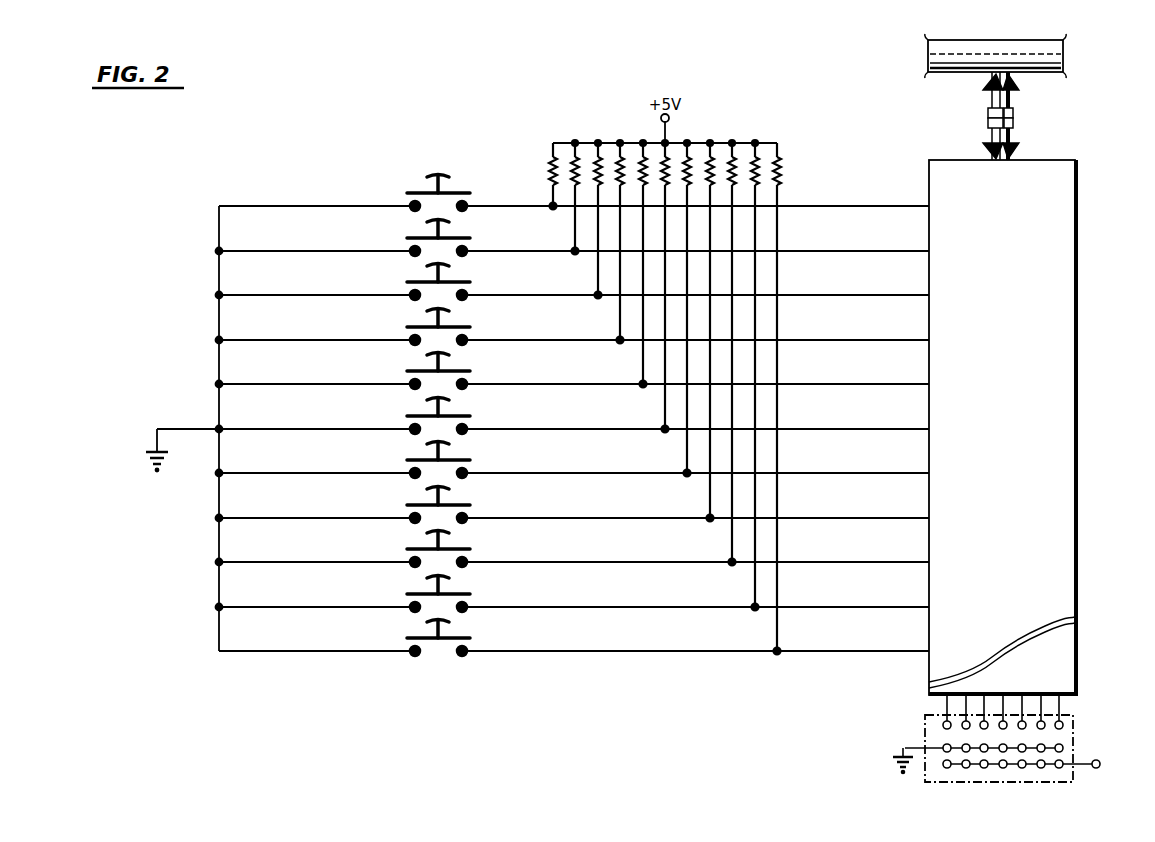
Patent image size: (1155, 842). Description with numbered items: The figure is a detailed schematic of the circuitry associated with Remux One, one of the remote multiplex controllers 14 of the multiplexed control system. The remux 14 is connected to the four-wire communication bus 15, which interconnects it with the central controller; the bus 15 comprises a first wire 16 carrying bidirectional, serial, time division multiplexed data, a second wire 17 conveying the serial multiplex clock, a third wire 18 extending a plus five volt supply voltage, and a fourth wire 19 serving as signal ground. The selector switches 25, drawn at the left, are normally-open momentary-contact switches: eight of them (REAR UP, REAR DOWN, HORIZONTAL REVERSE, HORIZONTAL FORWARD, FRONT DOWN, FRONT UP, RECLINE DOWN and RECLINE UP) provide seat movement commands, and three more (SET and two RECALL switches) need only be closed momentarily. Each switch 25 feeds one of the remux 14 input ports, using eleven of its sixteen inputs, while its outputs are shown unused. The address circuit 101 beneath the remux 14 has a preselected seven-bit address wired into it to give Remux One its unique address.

The remote multiplex controller 14 is at (1062, 160).
The four-wire communication bus 15 is at (930, 48).
The first wire 16 is at (992, 112).
The second wire 17 is at (990, 122).
The third wire 18 is at (1012, 112).
The fourth wire 19 is at (1012, 121).
The selector switches 25 is at (148, 216).
The address circuit 101 is at (1075, 720).